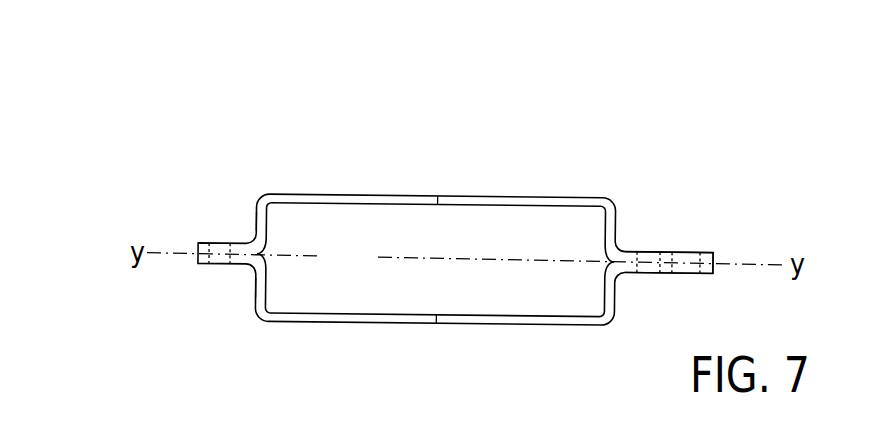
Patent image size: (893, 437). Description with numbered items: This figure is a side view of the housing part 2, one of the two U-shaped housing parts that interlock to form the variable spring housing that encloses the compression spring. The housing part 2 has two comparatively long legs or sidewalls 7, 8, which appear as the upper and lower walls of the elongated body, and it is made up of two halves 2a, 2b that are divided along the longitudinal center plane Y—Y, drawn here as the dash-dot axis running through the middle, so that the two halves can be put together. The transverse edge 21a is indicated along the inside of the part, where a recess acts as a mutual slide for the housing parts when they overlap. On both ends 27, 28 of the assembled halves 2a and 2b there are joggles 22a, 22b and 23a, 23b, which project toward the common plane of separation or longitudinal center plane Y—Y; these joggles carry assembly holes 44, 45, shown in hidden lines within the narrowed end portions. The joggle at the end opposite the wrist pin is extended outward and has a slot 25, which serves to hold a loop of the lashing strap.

The housing part 2 is at (385, 340).
The half of housing part 2a is at (396, 184).
The half of housing part 2b is at (468, 341).
The sidewall 7 is at (542, 184).
The sidewall 8 is at (551, 341).
The transverse edge 21a is at (286, 222).
The joggle 22a is at (244, 212).
The joggle 22b is at (243, 280).
The joggle 23a is at (624, 232).
The joggle 23b is at (633, 287).
The slot 25 is at (692, 251).
The end of housing part 27 is at (246, 330).
The end of housing part 28 is at (629, 318).
The assembly hole 44 is at (218, 243).
The assembly hole 45 is at (652, 250).